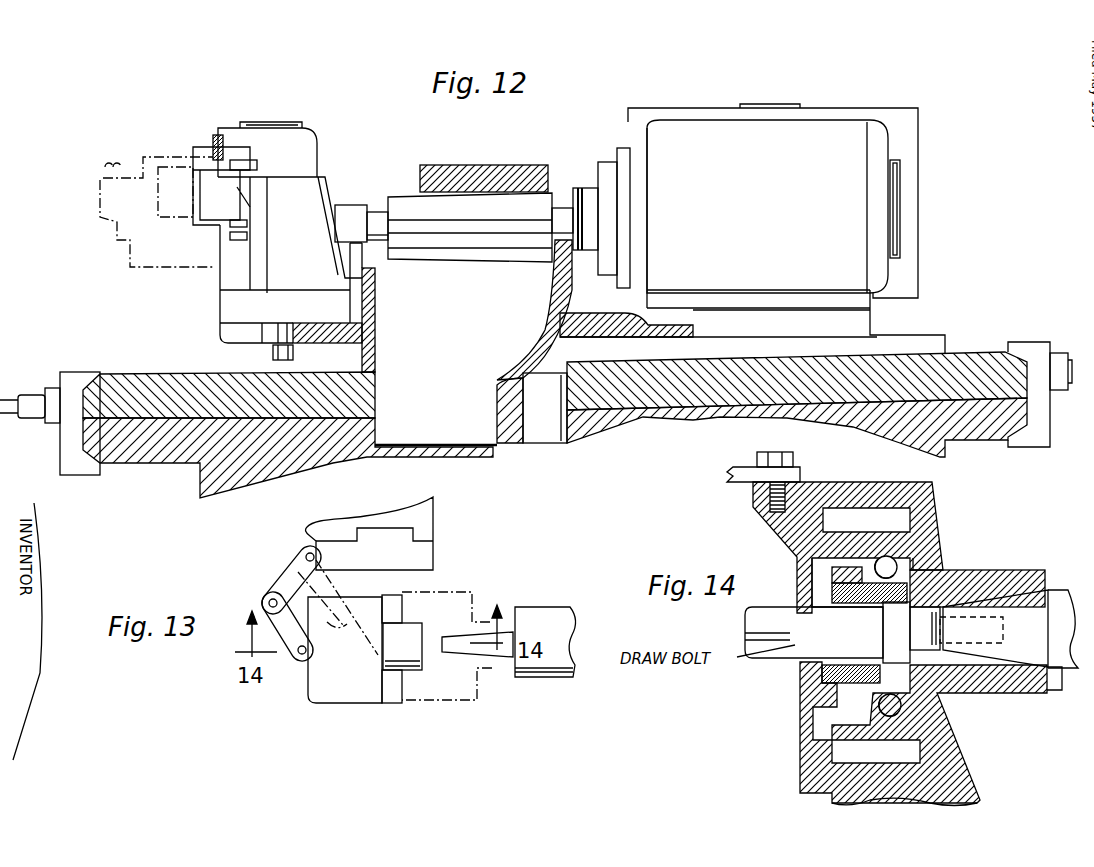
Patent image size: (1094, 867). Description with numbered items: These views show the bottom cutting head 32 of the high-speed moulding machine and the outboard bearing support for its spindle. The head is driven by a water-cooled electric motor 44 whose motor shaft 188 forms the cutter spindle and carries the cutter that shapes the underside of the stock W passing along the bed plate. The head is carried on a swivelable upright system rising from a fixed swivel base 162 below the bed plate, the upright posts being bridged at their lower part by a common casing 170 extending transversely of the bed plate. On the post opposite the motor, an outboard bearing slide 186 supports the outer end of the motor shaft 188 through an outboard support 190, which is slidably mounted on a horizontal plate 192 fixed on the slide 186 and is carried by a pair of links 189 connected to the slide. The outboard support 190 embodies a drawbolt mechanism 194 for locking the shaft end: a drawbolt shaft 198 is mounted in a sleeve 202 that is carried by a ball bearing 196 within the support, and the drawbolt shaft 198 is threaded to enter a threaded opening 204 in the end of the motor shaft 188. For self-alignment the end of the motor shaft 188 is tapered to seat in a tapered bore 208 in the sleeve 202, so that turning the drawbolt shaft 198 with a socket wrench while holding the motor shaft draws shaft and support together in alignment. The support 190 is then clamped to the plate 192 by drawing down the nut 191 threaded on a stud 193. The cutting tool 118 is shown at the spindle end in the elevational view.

In FIG. 12, the bottom cutting head 32 is at (706, 104).
In FIG. 12, the electric motor 44 is at (831, 128).
In FIG. 12, the stock W is at (519, 167).
In FIG. 13, the cutting tool 118 is at (504, 660).
In FIG. 12, the swivel base 162 is at (160, 452).
In FIG. 12, the common casing 170 is at (650, 405).
In FIG. 12, the outboard bearing slide 186 is at (310, 161).
In FIG. 13, the outboard bearing slide 186 is at (437, 550).
In FIG. 12, the motor shaft 188 is at (562, 207).
In FIG. 14, the motor shaft 188 is at (1058, 589).
In FIG. 12, the links 189 is at (220, 160).
In FIG. 13, the links 189 is at (267, 597).
In FIG. 14, the links 189 is at (746, 482).
In FIG. 12, the outboard support 190 is at (280, 300).
In FIG. 13, the outboard support 190 is at (328, 702).
In FIG. 12, the nut 191 is at (273, 355).
In FIG. 12, the horizontal plate 192 is at (320, 341).
In FIG. 12, the stud 193 is at (283, 323).
In FIG. 12, the drawbolt mechanism 194 is at (237, 245).
In FIG. 14, the drawbolt mechanism 194 is at (793, 668).
In FIG. 14, the ball bearing 196 is at (884, 557).
In FIG. 14, the drawbolt shaft 198 is at (922, 639).
In FIG. 12, the sleeve 202 is at (353, 205).
In FIG. 13, the sleeve 202 is at (413, 668).
In FIG. 14, the sleeve 202 is at (985, 580).
In FIG. 14, the threaded opening 204 is at (1004, 627).
In FIG. 14, the tapered bore 208 is at (1060, 676).